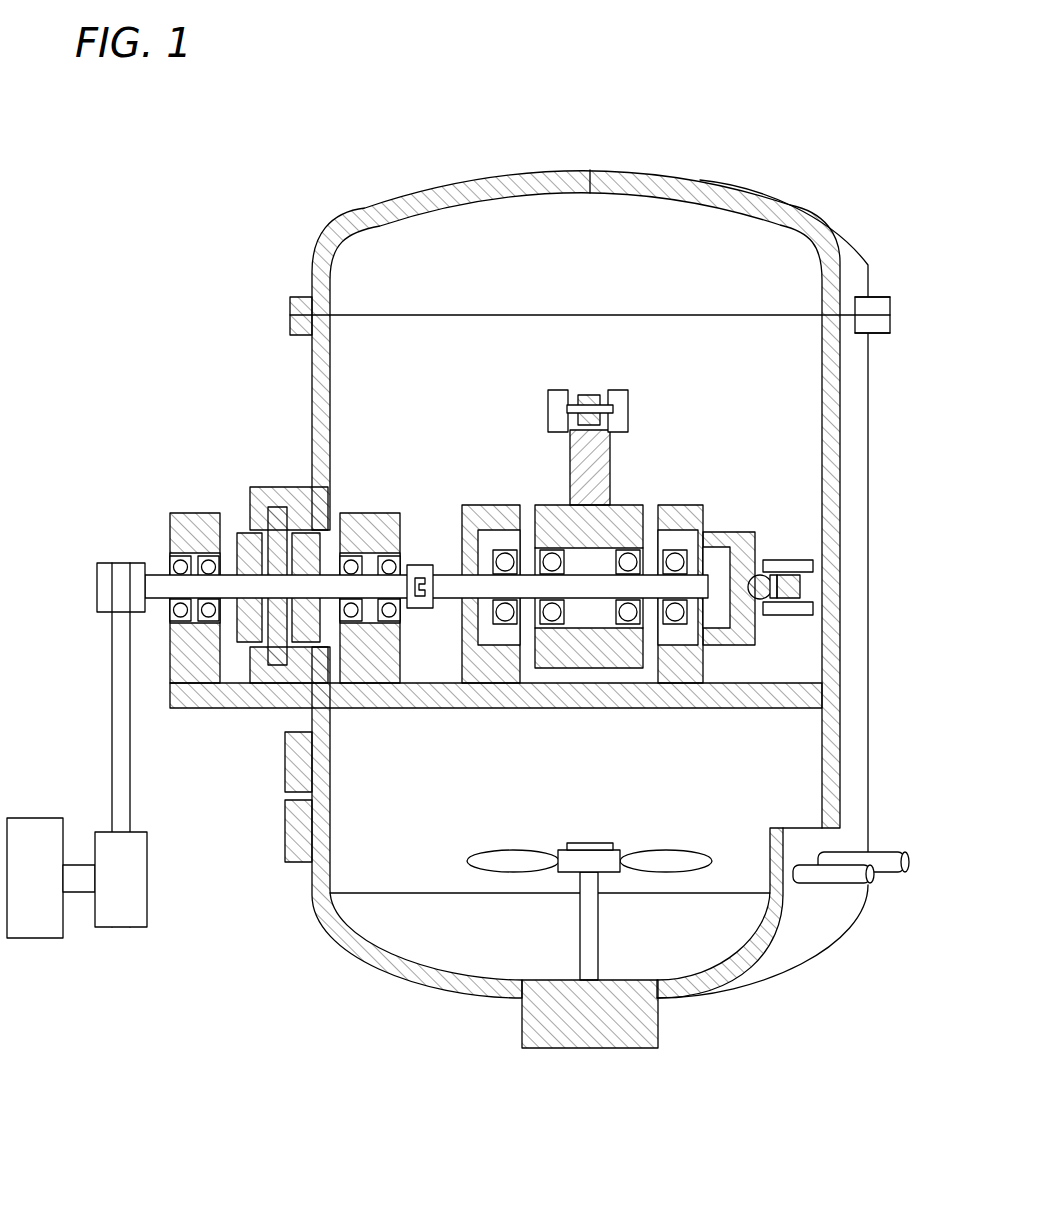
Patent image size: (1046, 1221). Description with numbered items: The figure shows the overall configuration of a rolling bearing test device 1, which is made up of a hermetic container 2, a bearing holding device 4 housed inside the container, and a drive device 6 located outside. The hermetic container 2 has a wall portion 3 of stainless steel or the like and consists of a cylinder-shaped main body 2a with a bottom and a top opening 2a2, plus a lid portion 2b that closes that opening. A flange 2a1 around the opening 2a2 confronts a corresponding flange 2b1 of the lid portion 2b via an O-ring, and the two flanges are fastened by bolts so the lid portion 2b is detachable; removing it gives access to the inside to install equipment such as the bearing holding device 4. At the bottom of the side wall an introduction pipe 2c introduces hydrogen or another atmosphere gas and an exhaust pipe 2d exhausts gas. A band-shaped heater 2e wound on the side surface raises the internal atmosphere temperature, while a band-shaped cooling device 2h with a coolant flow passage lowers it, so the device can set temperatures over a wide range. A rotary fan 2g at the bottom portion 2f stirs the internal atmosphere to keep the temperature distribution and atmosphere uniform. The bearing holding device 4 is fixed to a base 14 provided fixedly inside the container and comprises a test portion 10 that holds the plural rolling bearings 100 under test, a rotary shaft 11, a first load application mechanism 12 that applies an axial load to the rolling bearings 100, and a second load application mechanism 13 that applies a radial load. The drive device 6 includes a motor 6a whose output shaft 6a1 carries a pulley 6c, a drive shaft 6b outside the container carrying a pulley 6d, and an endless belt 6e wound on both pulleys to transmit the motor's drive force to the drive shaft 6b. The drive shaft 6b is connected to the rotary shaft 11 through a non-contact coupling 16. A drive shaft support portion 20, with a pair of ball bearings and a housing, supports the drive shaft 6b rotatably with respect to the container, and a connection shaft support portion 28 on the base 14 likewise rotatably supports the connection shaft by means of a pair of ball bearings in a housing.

The rolling bearing test device 1 is at (794, 143).
The hermetic container 2 is at (836, 226).
The main body 2a is at (866, 478).
The flange 2a1 is at (876, 327).
The opening 2a2 is at (336, 350).
The lid portion 2b is at (466, 218).
The flange 2b1 is at (876, 305).
The introduction pipe 2c is at (890, 852).
The exhaust pipe 2d is at (840, 884).
The heater 2e is at (285, 834).
The bottom portion 2f is at (420, 950).
The rotary fan 2g is at (581, 843).
The cooling device 2h is at (285, 779).
The wall portion 3 is at (478, 1000).
The bearing holding device 4 is at (494, 356).
The drive device 6 is at (66, 495).
The motor 6a is at (31, 818).
The output shaft 6a1 is at (80, 893).
The drive shaft 6b is at (150, 575).
The pulley 6c is at (148, 893).
The pulley 6d is at (97, 578).
The endless belt 6e is at (112, 718).
The test portion 10 is at (678, 483).
The rotary shaft 11 is at (447, 592).
The first load application mechanism 12 is at (802, 587).
The second load application mechanism 13 is at (629, 396).
The base 14 is at (784, 683).
The non-contact coupling 16 is at (238, 672).
The drive shaft support portion 20 is at (190, 514).
The connection shaft support portion 28 is at (366, 514).
The rolling bearings 100 is at (505, 622).